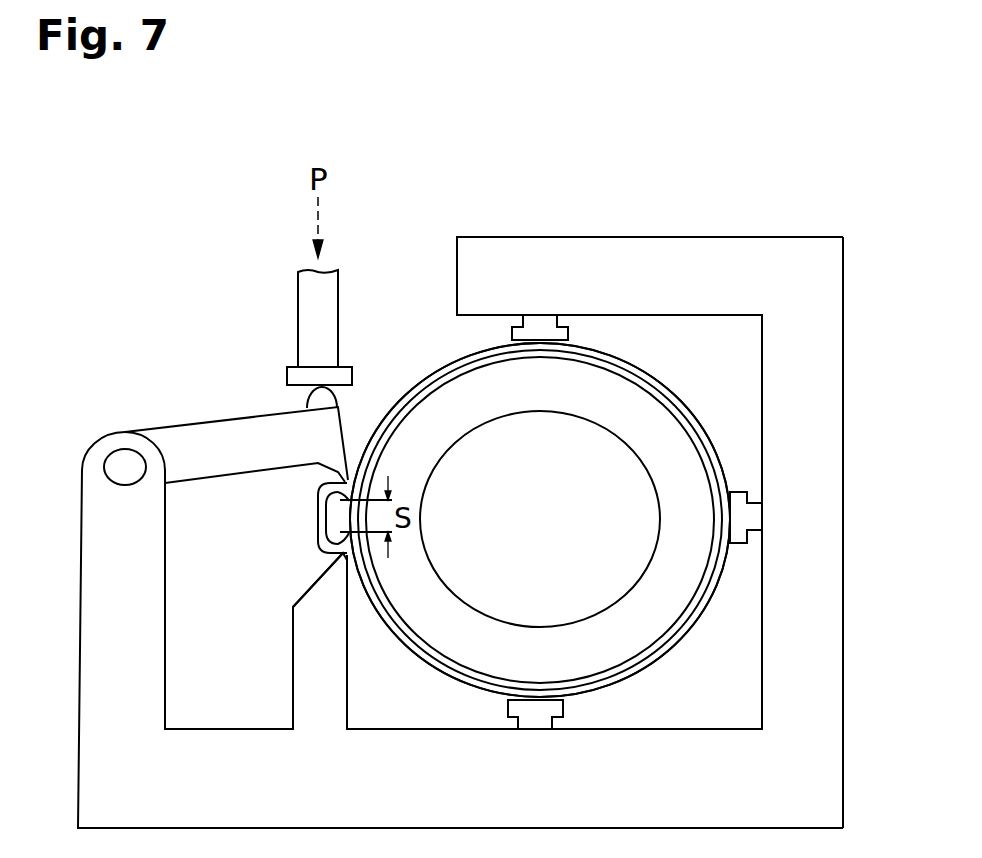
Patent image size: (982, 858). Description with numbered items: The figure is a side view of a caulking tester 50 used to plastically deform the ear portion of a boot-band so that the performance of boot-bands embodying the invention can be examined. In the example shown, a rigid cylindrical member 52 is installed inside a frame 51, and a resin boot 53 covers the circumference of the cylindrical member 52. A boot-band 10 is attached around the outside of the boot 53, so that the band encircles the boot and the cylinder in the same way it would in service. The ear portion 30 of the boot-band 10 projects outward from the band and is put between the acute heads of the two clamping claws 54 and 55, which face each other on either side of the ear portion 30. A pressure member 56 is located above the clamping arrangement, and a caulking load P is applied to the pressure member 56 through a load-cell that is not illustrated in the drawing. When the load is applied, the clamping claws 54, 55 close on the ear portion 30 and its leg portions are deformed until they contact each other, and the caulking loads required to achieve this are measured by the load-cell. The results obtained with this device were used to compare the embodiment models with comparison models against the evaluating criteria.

The boot-band 10 is at (410, 390).
The ear portion 30 is at (303, 528).
The caulking tester 50 is at (705, 226).
The frame 51 is at (835, 690).
The rigid cylindrical member 52 is at (645, 632).
The resin boot 53 is at (650, 380).
The clamping claw 54 is at (337, 471).
The clamping claw 55 is at (340, 554).
The pressure member 56 is at (298, 319).